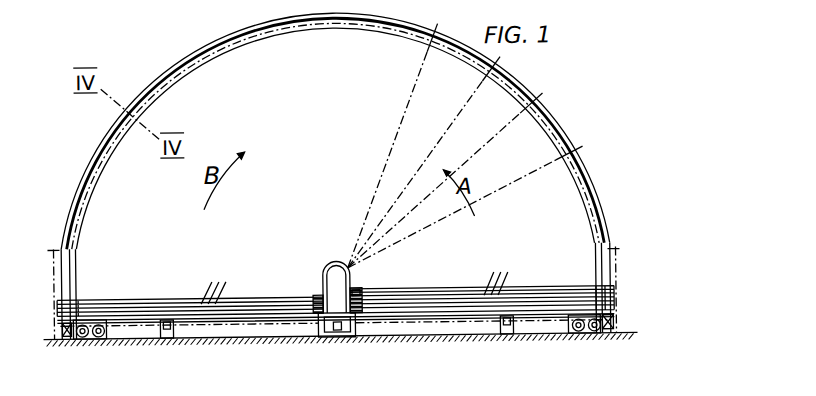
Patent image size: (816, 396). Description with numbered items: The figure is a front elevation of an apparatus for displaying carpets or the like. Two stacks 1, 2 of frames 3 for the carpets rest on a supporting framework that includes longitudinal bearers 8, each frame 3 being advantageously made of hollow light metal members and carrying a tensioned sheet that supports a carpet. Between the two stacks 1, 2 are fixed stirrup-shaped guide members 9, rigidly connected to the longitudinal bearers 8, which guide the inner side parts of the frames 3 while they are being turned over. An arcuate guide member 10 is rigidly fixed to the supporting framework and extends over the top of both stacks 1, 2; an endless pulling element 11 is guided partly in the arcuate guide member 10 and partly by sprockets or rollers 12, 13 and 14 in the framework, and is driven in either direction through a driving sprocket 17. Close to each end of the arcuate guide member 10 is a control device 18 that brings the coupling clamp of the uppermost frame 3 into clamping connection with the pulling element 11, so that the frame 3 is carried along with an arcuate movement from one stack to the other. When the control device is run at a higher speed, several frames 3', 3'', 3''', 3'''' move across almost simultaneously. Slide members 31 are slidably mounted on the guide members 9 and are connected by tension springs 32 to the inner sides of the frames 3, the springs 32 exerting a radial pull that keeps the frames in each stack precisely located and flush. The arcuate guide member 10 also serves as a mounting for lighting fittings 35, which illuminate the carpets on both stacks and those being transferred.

The stack of frames 1 is at (451, 287).
The stack of frames 2 is at (168, 298).
The frame 3 is at (358, 274).
The frame 3' is at (465, 207).
The frame 3'' is at (445, 180).
The frame 3''' is at (423, 162).
The frame 3'''' is at (397, 146).
The longitudinal bearer 8 is at (232, 318).
The guide member 9 is at (329, 266).
The arcuate guide member 10 is at (557, 123).
The endless pulling element 11 is at (568, 145).
The sprocket or roller 12 is at (96, 337).
The sprocket or roller 13 is at (158, 333).
The sprocket or roller 14 is at (332, 338).
The driving sprocket 17 is at (313, 335).
The control device 18 is at (53, 247).
The slide member 31 is at (352, 292).
The tension spring 32 is at (317, 300).
The lighting fitting 35 is at (98, 171).